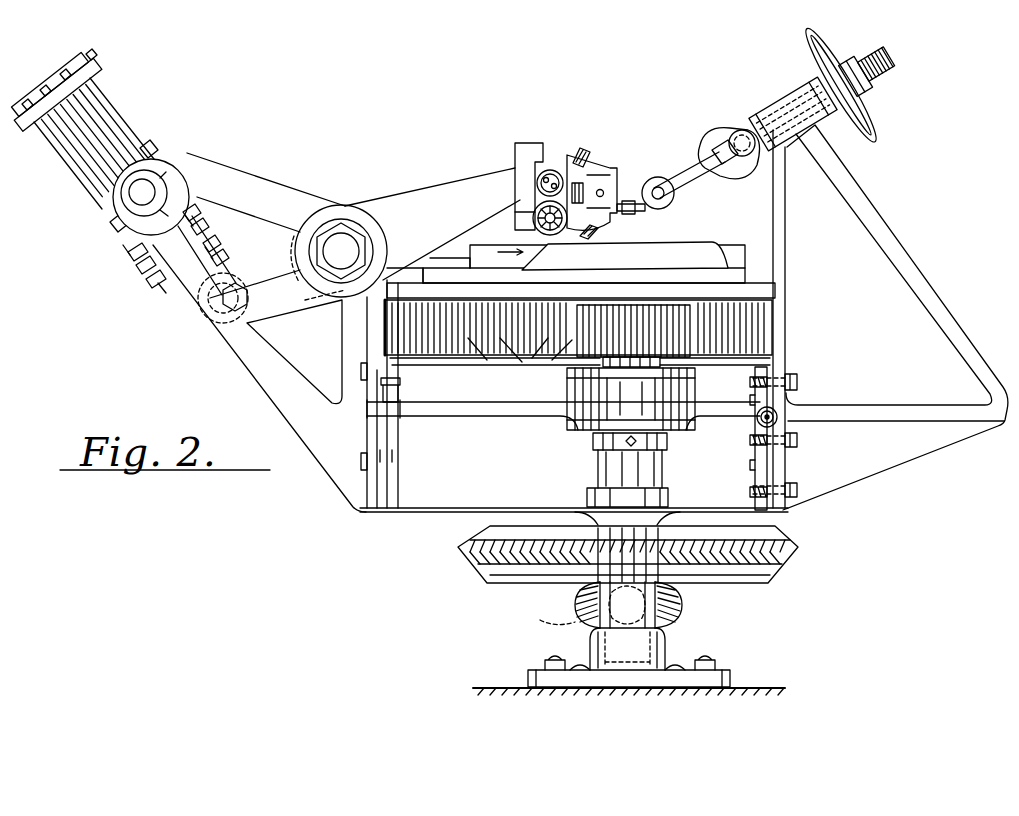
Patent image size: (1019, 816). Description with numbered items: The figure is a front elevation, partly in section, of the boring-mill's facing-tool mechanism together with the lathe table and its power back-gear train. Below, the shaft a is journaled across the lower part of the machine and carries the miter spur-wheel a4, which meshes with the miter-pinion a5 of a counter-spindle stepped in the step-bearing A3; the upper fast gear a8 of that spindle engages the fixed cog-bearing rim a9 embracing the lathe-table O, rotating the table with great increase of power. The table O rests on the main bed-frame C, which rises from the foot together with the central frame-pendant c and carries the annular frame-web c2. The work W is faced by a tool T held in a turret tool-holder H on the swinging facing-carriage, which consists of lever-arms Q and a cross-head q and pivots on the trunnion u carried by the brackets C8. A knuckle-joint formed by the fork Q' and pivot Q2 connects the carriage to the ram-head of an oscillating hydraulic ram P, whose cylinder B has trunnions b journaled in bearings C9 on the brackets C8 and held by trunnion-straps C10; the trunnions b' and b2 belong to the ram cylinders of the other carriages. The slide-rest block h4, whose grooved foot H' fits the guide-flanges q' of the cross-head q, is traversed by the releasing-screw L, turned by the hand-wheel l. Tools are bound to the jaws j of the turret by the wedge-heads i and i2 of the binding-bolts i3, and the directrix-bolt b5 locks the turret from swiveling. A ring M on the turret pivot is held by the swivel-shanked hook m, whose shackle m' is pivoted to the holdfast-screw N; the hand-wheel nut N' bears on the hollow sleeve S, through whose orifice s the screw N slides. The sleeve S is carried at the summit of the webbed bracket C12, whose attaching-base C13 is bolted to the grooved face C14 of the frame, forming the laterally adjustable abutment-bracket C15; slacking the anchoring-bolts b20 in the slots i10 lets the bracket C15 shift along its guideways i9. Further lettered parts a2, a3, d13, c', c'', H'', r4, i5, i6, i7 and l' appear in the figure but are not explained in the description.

The step-bearing A3 is at (629, 661).
The shaft a is at (547, 617).
The gear teeth a2 is at (722, 567).
The bevel gear a3 is at (628, 550).
The miter spur-wheel a4 is at (683, 605).
The miter-pinion a5 is at (627, 487).
The upper fast gear a8 is at (631, 377).
The cog-bearing rim a9 is at (578, 332).
The teeth d13 is at (487, 360).
The lathe-table O is at (750, 250).
The work W is at (625, 256).
The main bed-frame C is at (574, 396).
The bolt c'' is at (409, 468).
The abutment-bracket C15 is at (890, 317).
The attaching-base C13 is at (788, 458).
The webbed bracket C12 is at (733, 444).
The horizontally-grooved face C14 is at (762, 485).
The trunnions b2 is at (797, 380).
The anchoring-bolts b20 is at (797, 440).
The horizontal guideways i9 is at (762, 398).
The longitudinal slots i10 is at (777, 392).
The pivot i6 is at (773, 413).
The pivot i7 is at (755, 420).
The brackets C8 is at (259, 332).
The trunnion u is at (341, 251).
The central frame-pendant c is at (329, 234).
The slot c' is at (289, 279).
The annular frame-web c2 is at (527, 170).
The lever-arm Q is at (432, 224).
The fork Q' is at (212, 306).
The pivot Q2 is at (247, 290).
The trunnions b is at (212, 235).
The wedge-head i is at (126, 255).
The cylinder B is at (89, 140).
The trunnion-straps C10 is at (120, 200).
The bearings C9 is at (149, 193).
The trunnions b' is at (142, 192).
The hydraulic ram P is at (185, 107).
The grooved foot H' is at (513, 185).
The bracket H'' is at (513, 224).
The slide-rest block h4 is at (535, 144).
The wheel r4 is at (556, 170).
The releasing-screw L is at (546, 224).
The tool-holder H is at (592, 192).
The tool T is at (584, 149).
The wedge-head i2 is at (600, 157).
The binding-bolts i3 is at (612, 163).
The screw i5 is at (612, 230).
The hand-wheel l is at (546, 249).
The lever l' is at (571, 247).
The jaw j is at (612, 228).
The cross-head q is at (522, 178).
The guide-flanges q' is at (505, 191).
The directrix-bolt b5 is at (640, 213).
The ring M is at (654, 181).
The swivel-shanked hook m is at (689, 175).
The shackle m' is at (728, 146).
The hollow sleeve S is at (793, 110).
The orifice s is at (750, 112).
The holdfast-screw N is at (860, 73).
The hand-wheel nut N' is at (889, 99).